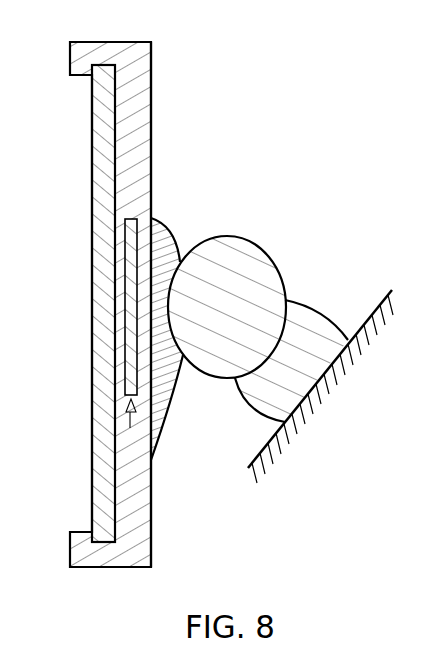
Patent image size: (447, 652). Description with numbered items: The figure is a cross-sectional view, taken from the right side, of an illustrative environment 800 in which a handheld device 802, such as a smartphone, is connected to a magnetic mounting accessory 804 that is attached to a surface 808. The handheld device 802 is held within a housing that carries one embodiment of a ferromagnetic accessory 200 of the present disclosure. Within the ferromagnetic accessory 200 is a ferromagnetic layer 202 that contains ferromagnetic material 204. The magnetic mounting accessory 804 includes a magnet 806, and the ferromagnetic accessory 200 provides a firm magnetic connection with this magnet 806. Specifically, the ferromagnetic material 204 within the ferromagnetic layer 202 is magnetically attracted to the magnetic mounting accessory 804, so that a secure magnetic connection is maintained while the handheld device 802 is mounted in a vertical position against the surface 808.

The illustrative environment 800 is at (280, 75).
The ferromagnetic accessory 200 is at (151, 158).
The handheld device 802 is at (92, 134).
The ferromagnetic material 204 is at (147, 422).
The ferromagnetic layer 202 is at (151, 460).
The magnet 806 is at (170, 233).
The magnetic mounting accessory 804 is at (268, 256).
The surface 808 is at (380, 300).